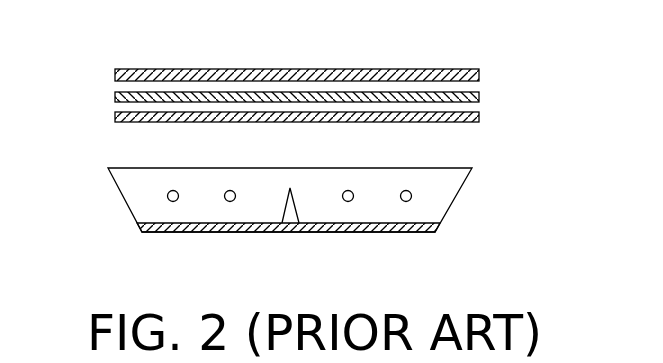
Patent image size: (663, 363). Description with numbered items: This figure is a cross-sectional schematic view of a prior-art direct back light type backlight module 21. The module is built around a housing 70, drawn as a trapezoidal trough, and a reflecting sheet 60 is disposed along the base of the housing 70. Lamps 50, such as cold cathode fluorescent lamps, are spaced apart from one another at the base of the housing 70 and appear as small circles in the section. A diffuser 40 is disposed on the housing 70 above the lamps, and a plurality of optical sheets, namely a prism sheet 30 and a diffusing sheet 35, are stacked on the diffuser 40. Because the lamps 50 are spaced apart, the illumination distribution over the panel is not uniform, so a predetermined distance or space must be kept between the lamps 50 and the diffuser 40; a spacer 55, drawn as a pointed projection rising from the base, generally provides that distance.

The direct back light type backlight module 21 is at (102, 92).
The prism sheet 30 is at (254, 96).
The diffusing sheet 35 is at (300, 69).
The diffuser 40 is at (370, 118).
The lamps 50 is at (226, 200).
The spacer 55 is at (290, 215).
The reflecting sheet 60 is at (422, 234).
The housing 70 is at (460, 202).